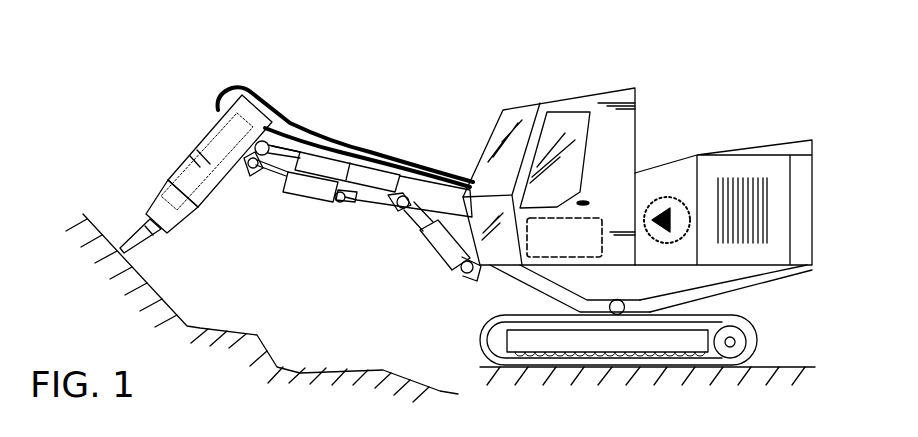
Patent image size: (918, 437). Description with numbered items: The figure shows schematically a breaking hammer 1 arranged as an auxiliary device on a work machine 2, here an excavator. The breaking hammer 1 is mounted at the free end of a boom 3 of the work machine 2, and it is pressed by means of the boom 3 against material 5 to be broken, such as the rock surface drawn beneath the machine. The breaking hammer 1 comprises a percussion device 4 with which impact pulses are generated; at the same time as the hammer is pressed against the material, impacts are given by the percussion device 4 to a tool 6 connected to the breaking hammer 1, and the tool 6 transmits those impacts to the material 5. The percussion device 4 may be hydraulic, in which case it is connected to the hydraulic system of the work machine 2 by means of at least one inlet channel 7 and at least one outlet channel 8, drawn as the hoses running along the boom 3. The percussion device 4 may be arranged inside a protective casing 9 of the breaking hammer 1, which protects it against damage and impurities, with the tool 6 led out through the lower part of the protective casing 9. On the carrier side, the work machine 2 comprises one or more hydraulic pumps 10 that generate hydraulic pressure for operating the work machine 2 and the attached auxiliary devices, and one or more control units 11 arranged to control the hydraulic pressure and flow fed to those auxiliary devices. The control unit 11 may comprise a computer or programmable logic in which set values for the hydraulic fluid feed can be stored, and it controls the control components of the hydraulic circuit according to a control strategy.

The breaking hammer 1 is at (130, 136).
The work machine 2 is at (690, 73).
The boom 3 is at (377, 178).
The percussion device 4 is at (214, 134).
The material to be broken 5 is at (178, 322).
The tool 6 is at (134, 226).
The inlet channel 7 is at (248, 88).
The outlet channel 8 is at (300, 130).
The protective casing 9 is at (220, 170).
The hydraulic pump 10 is at (673, 243).
The control unit 11 is at (568, 258).